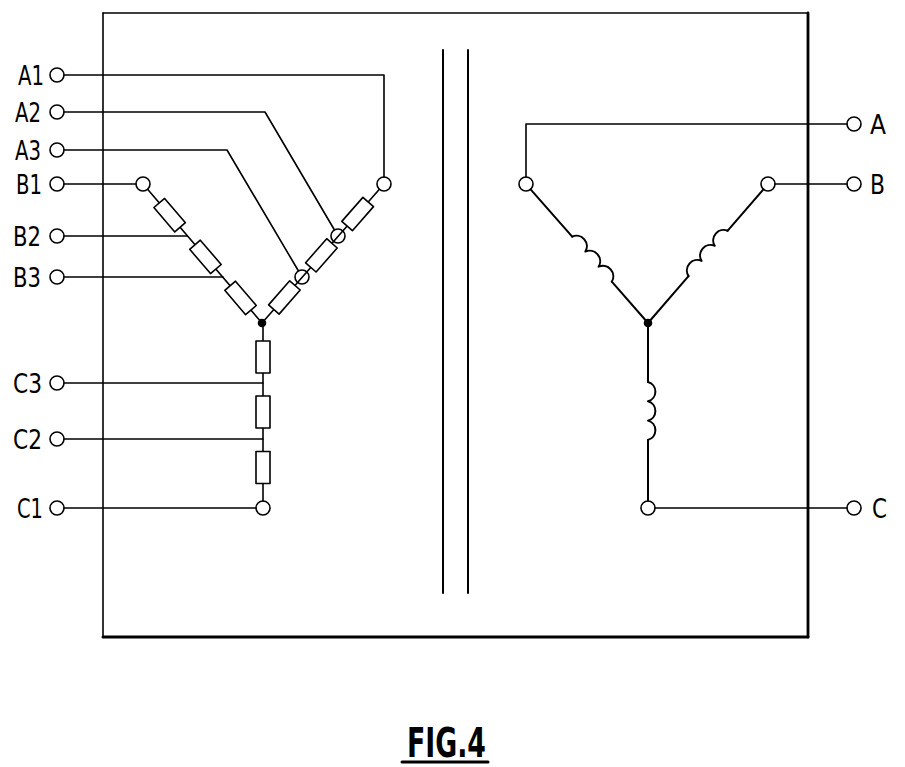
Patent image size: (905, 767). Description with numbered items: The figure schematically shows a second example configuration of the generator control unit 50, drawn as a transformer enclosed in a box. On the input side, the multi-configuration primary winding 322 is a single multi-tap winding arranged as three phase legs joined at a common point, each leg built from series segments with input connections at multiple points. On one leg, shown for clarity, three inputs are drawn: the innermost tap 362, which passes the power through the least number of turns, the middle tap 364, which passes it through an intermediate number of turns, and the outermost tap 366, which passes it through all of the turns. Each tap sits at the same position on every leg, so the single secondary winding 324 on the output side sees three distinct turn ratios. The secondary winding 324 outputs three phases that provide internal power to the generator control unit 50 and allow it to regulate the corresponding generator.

The generator control unit 50 is at (603, 674).
The multi-configuration primary winding 322 is at (306, 350).
The secondary winding 324 is at (583, 443).
The innermost tap 362 is at (306, 285).
The middle tap 364 is at (341, 244).
The outermost tap 366 is at (391, 190).